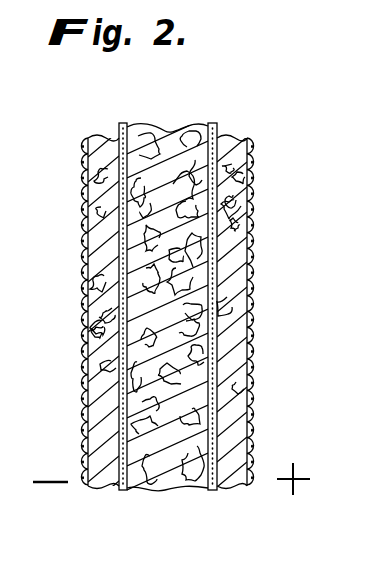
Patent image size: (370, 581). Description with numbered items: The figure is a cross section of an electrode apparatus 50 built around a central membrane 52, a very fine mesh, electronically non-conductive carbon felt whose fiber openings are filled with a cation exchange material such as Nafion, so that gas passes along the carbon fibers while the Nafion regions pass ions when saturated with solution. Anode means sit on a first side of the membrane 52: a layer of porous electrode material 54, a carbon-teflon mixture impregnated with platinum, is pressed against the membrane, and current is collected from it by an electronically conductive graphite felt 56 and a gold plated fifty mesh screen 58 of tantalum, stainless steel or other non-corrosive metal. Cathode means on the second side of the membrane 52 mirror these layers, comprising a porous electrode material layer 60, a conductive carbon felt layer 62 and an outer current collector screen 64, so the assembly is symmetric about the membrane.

The electrode apparatus 50 is at (273, 157).
The central membrane 52 is at (175, 455).
The porous electrode material layer 54 is at (118, 131).
The graphite felt layer 56 is at (104, 234).
The gold plated screen 58 is at (83, 385).
The porous electrode material layer 60 is at (218, 128).
The conductive carbon felt layer 62 is at (249, 258).
The current collector screen 64 is at (257, 363).